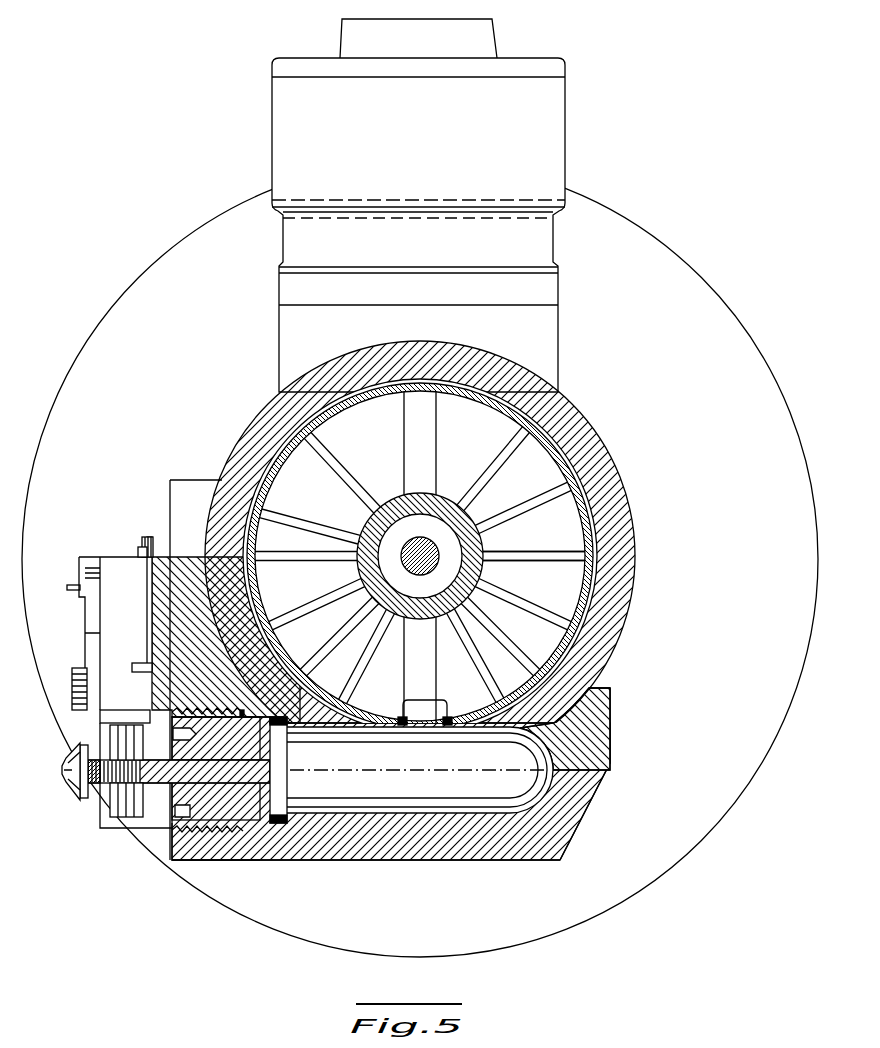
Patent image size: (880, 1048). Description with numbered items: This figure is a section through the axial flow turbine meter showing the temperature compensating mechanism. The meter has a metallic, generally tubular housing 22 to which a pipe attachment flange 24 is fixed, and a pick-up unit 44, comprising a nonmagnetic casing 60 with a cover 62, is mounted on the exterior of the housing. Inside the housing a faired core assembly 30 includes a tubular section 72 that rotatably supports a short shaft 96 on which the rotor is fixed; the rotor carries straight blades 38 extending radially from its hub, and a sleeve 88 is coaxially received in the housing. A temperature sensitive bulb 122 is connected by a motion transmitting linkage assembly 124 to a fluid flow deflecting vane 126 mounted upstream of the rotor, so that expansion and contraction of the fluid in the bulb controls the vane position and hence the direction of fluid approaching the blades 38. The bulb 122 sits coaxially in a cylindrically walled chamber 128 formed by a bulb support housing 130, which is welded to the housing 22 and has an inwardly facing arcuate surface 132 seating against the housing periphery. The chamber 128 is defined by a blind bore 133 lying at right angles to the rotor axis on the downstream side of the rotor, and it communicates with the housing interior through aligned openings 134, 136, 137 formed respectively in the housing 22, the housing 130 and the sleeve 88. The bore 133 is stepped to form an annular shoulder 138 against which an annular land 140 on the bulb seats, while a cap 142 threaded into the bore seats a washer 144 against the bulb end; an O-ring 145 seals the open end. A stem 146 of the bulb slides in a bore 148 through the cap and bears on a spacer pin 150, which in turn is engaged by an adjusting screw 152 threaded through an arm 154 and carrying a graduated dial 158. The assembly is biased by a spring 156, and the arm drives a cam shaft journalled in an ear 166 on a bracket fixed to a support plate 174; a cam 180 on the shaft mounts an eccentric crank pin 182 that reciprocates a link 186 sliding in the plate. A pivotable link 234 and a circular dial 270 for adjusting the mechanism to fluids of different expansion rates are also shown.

The housing 22 is at (612, 448).
The pipe attachment flange 24 is at (716, 297).
The core assembly 30 is at (470, 507).
The blades 38 is at (478, 455).
The pick-up unit 44 is at (612, 138).
The casing 60 is at (551, 105).
The cover 62 is at (558, 62).
The tubular section 72 is at (483, 557).
The sleeve 88 is at (592, 560).
The shaft 96 is at (435, 533).
The temperature sensitive bulb 122 is at (492, 779).
The motion transmitting linkage assembly 124 is at (78, 817).
The fluid flow deflecting vane 126 is at (328, 537).
The chamber 128 is at (560, 735).
The bulb support housing 130 is at (537, 858).
The arcuate surface 132 is at (224, 482).
The blind bore 133 is at (378, 815).
The opening 134 is at (590, 690).
The opening 136 is at (397, 703).
The opening 137 is at (448, 723).
The annular shoulder 138 is at (290, 757).
The annular land 140 is at (285, 772).
The cap 142 is at (193, 837).
The washer 144 is at (270, 823).
The O-ring 145 is at (277, 847).
The stem 146 is at (237, 772).
The bore 148 is at (205, 770).
The spacer pin 150 is at (168, 828).
The adjusting screw 152 is at (77, 787).
The arm 154 is at (110, 737).
The spring 156 is at (148, 547).
The dial 158 is at (67, 760).
The ear 166 is at (107, 828).
The support plate 174 is at (152, 590).
The cam 180 is at (100, 720).
The crank pin 182 is at (115, 670).
The link 186 is at (148, 662).
The pivotable link 234 is at (160, 537).
The dial 270 is at (90, 612).